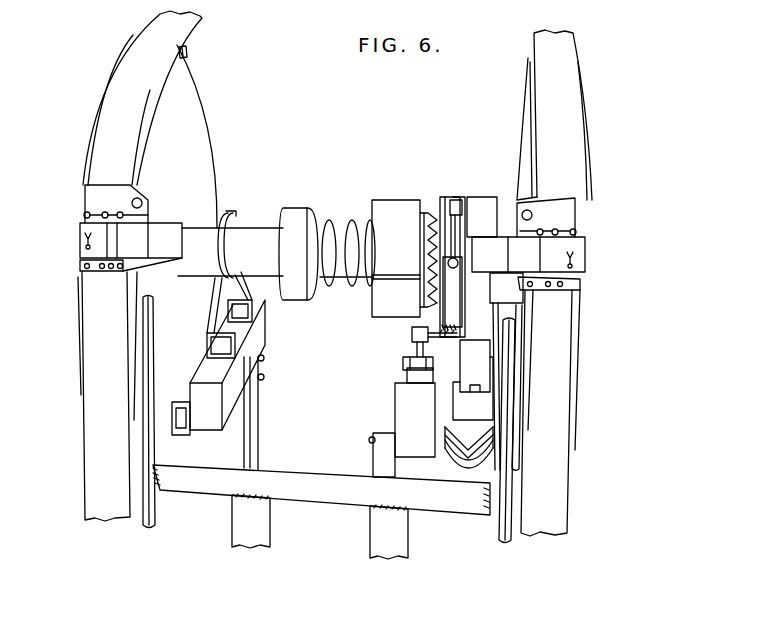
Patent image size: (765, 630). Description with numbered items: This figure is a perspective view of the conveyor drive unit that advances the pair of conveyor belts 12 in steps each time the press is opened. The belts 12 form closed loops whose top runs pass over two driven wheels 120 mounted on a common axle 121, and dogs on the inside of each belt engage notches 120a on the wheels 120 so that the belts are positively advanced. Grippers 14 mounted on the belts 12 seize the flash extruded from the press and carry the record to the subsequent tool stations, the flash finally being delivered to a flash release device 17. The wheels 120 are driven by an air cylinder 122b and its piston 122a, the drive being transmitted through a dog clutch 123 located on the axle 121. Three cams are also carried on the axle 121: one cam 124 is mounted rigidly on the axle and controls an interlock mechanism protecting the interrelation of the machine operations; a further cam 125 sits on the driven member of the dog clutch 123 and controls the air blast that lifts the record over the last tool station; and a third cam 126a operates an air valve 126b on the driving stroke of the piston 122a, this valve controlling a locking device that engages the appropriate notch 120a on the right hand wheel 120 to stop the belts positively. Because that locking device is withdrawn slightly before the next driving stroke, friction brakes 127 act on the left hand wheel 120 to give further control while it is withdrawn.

The conveyor belts 12 is at (181, 30).
The driven wheels 120 is at (203, 127).
The notches 120a is at (188, 53).
The grippers 14 is at (92, 218).
The flash release device 17 is at (145, 328).
The axle 121 is at (250, 238).
The cam 124 is at (229, 214).
The cam 125 is at (387, 277).
The dog clutch 123 is at (432, 215).
The cam 126a is at (413, 335).
The air valve 126b is at (403, 367).
The friction brakes 127 is at (177, 412).
The piston 122a is at (488, 408).
The air cylinder 122b is at (488, 458).